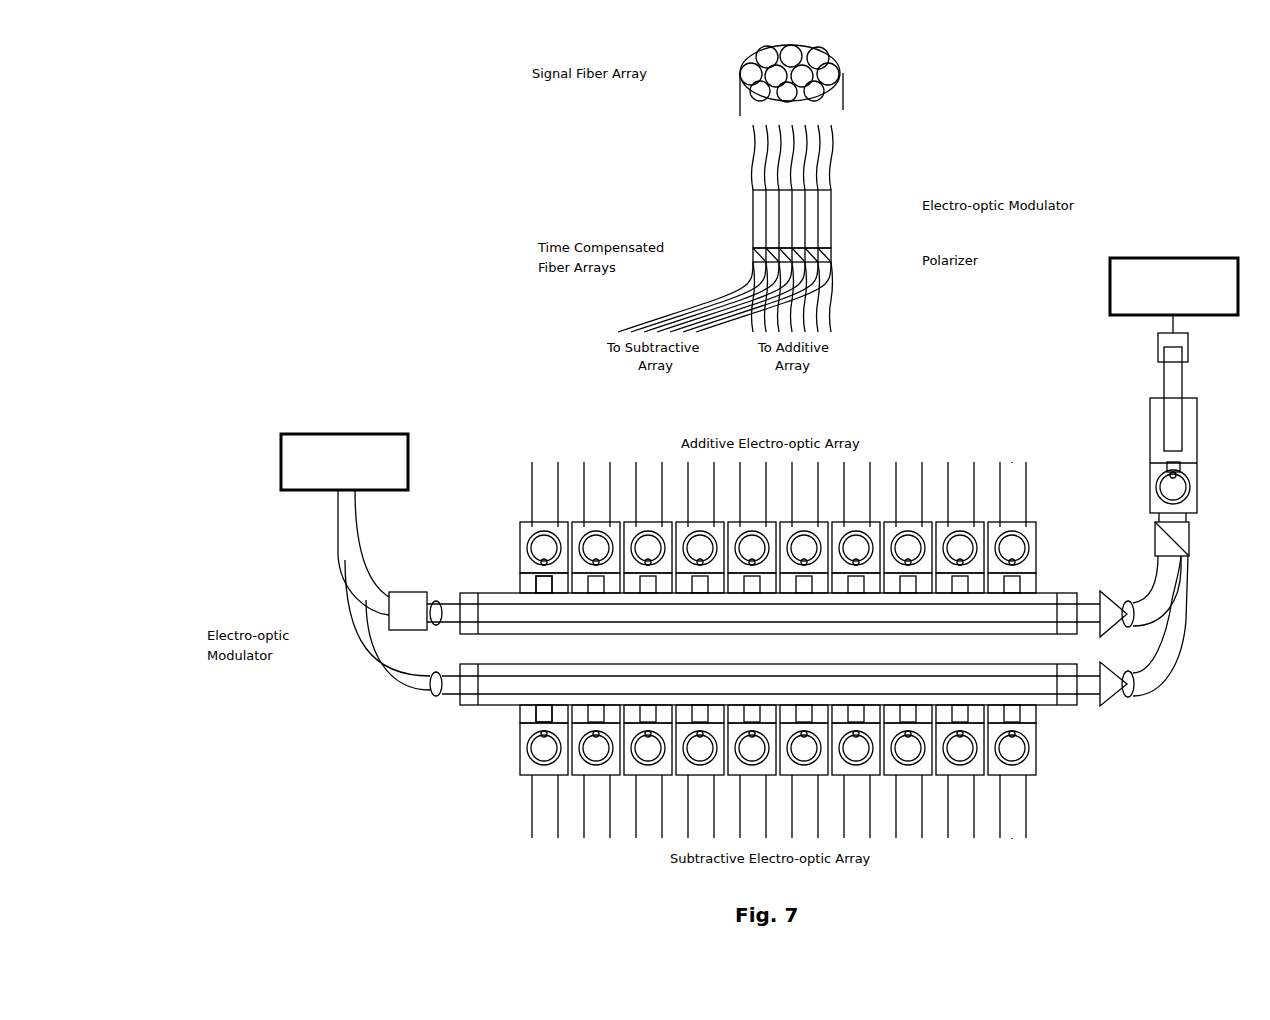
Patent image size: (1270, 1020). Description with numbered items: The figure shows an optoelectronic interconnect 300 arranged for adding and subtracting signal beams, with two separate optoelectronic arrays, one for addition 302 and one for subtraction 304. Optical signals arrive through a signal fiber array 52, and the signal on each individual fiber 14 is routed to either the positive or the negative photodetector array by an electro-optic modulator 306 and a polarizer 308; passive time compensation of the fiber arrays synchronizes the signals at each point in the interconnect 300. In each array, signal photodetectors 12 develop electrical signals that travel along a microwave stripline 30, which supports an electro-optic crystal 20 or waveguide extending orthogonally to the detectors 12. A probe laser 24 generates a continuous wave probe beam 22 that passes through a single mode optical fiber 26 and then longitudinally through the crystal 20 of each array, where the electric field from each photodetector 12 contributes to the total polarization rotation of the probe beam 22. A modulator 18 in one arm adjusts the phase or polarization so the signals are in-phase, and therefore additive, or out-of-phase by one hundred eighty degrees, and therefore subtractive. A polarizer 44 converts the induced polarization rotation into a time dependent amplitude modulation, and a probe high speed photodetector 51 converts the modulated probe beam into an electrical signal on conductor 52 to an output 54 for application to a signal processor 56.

The photodetector 12 is at (527, 540).
The fibers 14 is at (632, 325).
The modulator 18 is at (389, 622).
The electro-optic crystal 20 is at (506, 593).
The probe beam 22 is at (446, 600).
The probe laser 24 is at (390, 450).
The single mode optical fiber 26 is at (340, 543).
The microwave stripline 30 is at (543, 585).
The polarizer 44 is at (1190, 538).
The probe high speed photodetector 51 is at (1198, 490).
The conductor 52 is at (740, 76).
The output 54 is at (1190, 346).
The signal processor 56 is at (1226, 257).
The optoelectronic interconnect 300 is at (1021, 356).
The addition array 302 is at (1034, 513).
The subtraction array 304 is at (1046, 745).
The electro-optic modulator 306 is at (832, 205).
The polarizer 308 is at (832, 259).